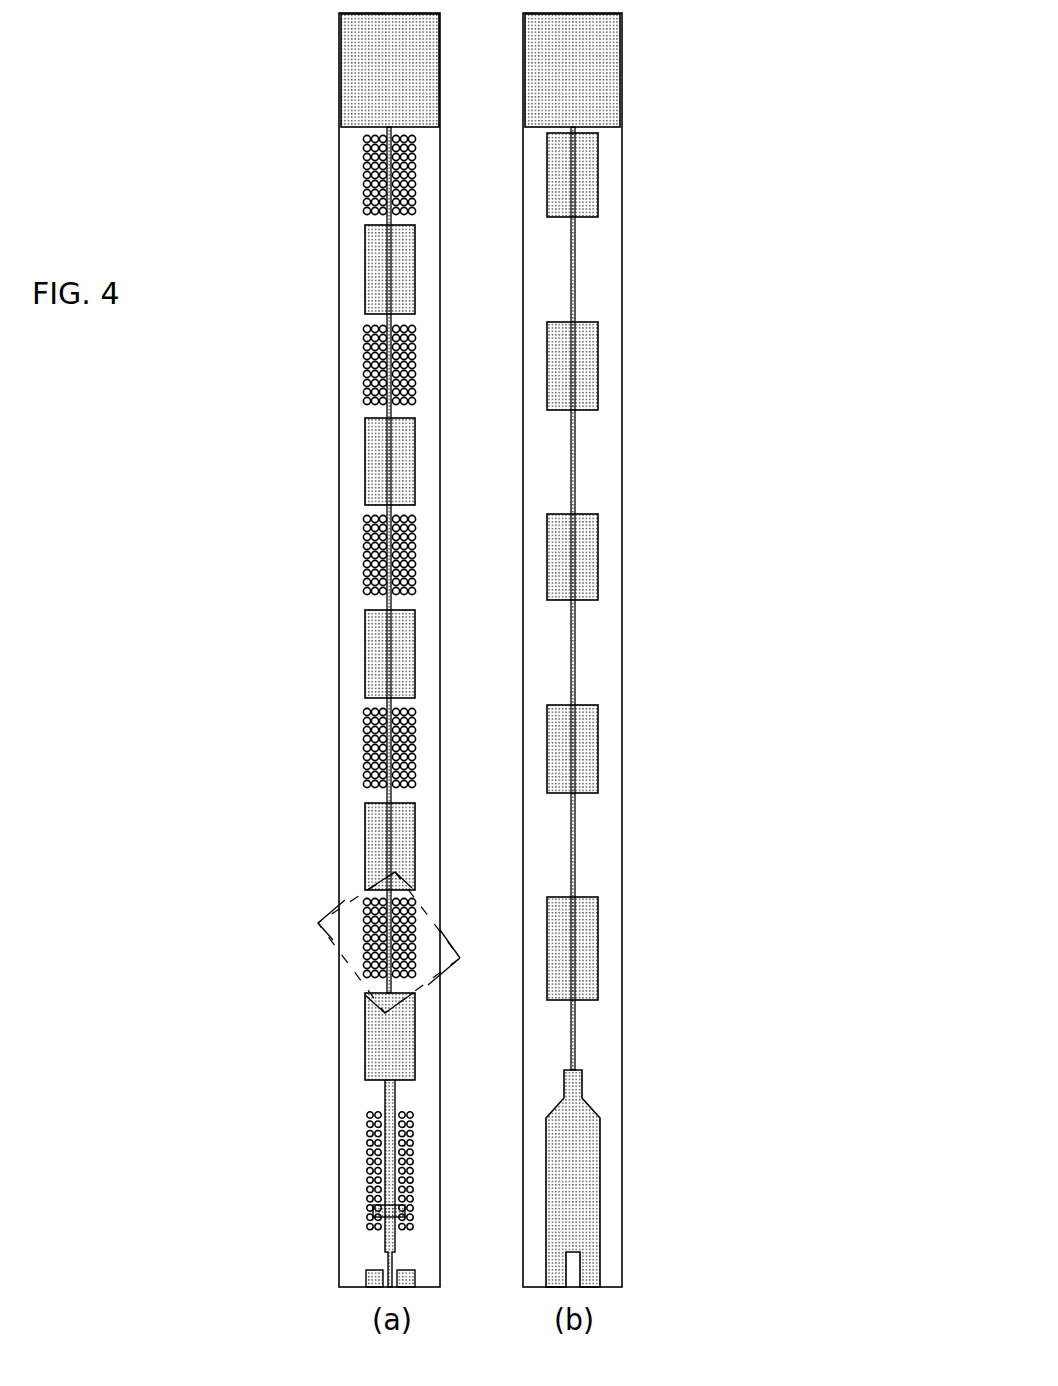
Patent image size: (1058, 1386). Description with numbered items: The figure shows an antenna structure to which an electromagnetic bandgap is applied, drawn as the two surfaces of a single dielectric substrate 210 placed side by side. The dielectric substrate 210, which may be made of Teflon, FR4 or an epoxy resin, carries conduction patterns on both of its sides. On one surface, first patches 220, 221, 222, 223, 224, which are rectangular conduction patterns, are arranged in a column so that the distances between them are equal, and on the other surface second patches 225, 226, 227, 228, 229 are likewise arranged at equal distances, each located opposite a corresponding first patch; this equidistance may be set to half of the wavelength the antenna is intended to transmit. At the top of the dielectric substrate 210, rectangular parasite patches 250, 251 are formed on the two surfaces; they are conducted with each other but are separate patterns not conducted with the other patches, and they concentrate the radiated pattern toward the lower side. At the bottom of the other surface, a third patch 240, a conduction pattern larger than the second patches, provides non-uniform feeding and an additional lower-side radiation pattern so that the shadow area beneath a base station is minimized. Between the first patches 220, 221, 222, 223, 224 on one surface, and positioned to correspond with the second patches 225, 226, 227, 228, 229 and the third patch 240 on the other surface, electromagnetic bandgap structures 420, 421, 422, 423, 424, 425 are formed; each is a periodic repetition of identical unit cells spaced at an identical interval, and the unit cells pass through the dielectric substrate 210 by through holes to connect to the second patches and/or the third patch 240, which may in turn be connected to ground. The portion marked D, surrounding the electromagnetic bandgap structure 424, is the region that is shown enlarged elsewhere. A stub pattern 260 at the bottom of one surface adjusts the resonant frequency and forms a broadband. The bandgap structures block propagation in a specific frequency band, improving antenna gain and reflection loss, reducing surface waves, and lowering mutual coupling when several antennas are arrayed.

The dielectric substrate 210 is at (339, 1100).
The parasite patch 250 is at (340, 72).
The parasite patch 251 is at (622, 71).
The first patch 220 is at (365, 270).
The first patch 221 is at (365, 462).
The first patch 222 is at (365, 655).
The first patch 223 is at (365, 845).
The first patch 224 is at (365, 1040).
The second patch 225 is at (598, 172).
The second patch 226 is at (598, 366).
The second patch 227 is at (598, 556).
The second patch 228 is at (598, 749).
The second patch 229 is at (598, 958).
The electromagnetic bandgap structure 420 is at (365, 170).
The electromagnetic bandgap structure 421 is at (365, 357).
The electromagnetic bandgap structure 422 is at (365, 559).
The electromagnetic bandgap structure 423 is at (365, 747).
The electromagnetic bandgap structure 424 is at (365, 946).
The electromagnetic bandgap structure 425 is at (368, 1160).
The stub pattern 260 is at (373, 1211).
The third patch 240 is at (600, 1210).
The D portion D is at (318, 923).